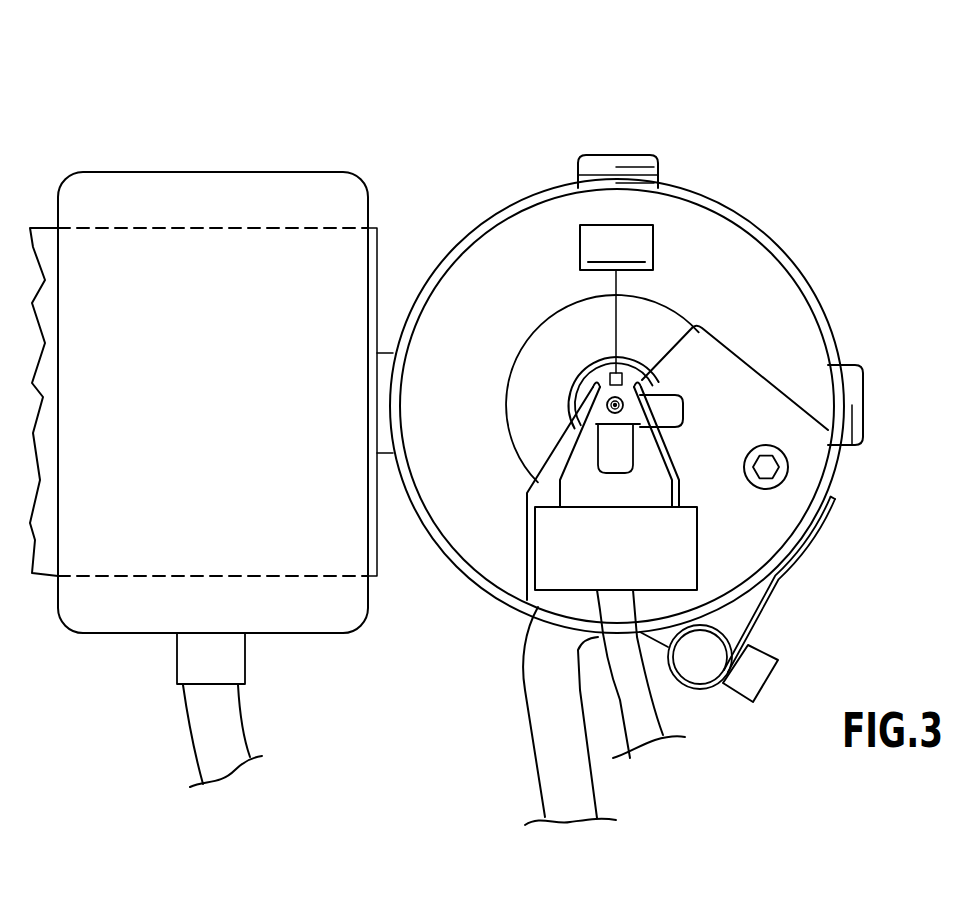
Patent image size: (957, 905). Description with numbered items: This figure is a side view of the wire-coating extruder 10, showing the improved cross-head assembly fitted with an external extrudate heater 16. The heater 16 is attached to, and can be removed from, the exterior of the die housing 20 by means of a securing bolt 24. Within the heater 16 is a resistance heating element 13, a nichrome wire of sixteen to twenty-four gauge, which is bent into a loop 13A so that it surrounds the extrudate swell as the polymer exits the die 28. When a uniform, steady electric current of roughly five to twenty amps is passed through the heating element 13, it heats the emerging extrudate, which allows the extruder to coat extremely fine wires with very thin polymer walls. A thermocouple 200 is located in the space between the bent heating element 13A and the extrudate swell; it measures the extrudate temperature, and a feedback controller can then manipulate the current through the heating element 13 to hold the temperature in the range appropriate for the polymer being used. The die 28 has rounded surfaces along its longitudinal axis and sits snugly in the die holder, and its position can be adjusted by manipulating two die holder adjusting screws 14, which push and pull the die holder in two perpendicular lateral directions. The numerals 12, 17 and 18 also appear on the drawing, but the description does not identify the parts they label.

The extruder 10 is at (902, 145).
The housing 12 is at (158, 171).
The resistance heating element 13 is at (670, 467).
The loop 13A is at (590, 403).
The die holder adjusting screws 14 is at (610, 153).
The external extrudate heater 16 is at (735, 347).
The hinge line 17 is at (290, 228).
The pivot 18 is at (613, 412).
The die housing 20 is at (791, 266).
The securing bolt 24 is at (790, 470).
The die 28 is at (578, 388).
The thermocouple 200 is at (616, 305).